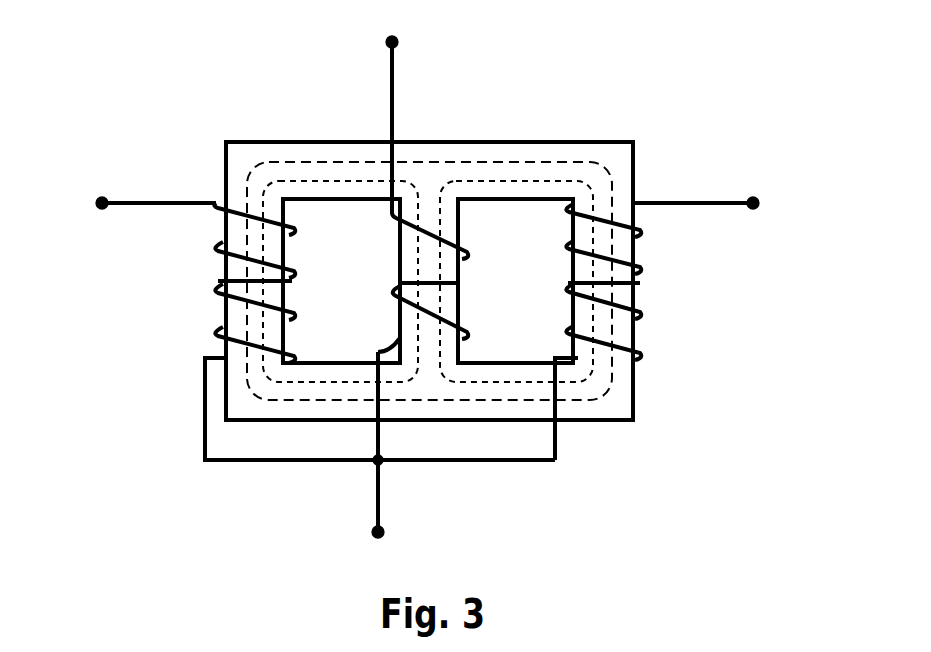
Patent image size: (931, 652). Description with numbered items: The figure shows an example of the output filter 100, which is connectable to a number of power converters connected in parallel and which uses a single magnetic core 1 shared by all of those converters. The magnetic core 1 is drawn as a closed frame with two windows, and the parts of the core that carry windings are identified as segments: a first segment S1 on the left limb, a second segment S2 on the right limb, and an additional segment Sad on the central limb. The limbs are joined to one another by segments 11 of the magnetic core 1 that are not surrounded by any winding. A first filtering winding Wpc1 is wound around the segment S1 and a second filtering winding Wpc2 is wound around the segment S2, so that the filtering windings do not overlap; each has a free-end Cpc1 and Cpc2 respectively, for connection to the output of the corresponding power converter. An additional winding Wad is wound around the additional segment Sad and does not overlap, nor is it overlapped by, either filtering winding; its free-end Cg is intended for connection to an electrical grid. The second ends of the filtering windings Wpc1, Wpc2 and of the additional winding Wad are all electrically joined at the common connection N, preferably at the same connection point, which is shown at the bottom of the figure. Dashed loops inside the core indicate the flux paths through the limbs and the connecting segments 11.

The output filter 100 is at (432, 269).
The magnetic core 1 is at (640, 405).
The segments of the magnetic core not surrounded by windings 11 is at (515, 147).
The free-end of first filtering winding Cpc1 is at (142, 185).
The free-end of second filtering winding Cpc2 is at (715, 182).
The free-end of additional winding Cg is at (389, 106).
The common connection N is at (388, 465).
The first segment of the magnetic core S1 is at (235, 236).
The second segment of the magnetic core S2 is at (620, 243).
The additional segment of the magnetic core Sad is at (417, 242).
The additional winding Wad is at (476, 240).
The first filtering winding Wpc1 is at (212, 290).
The second filtering winding Wpc2 is at (652, 312).